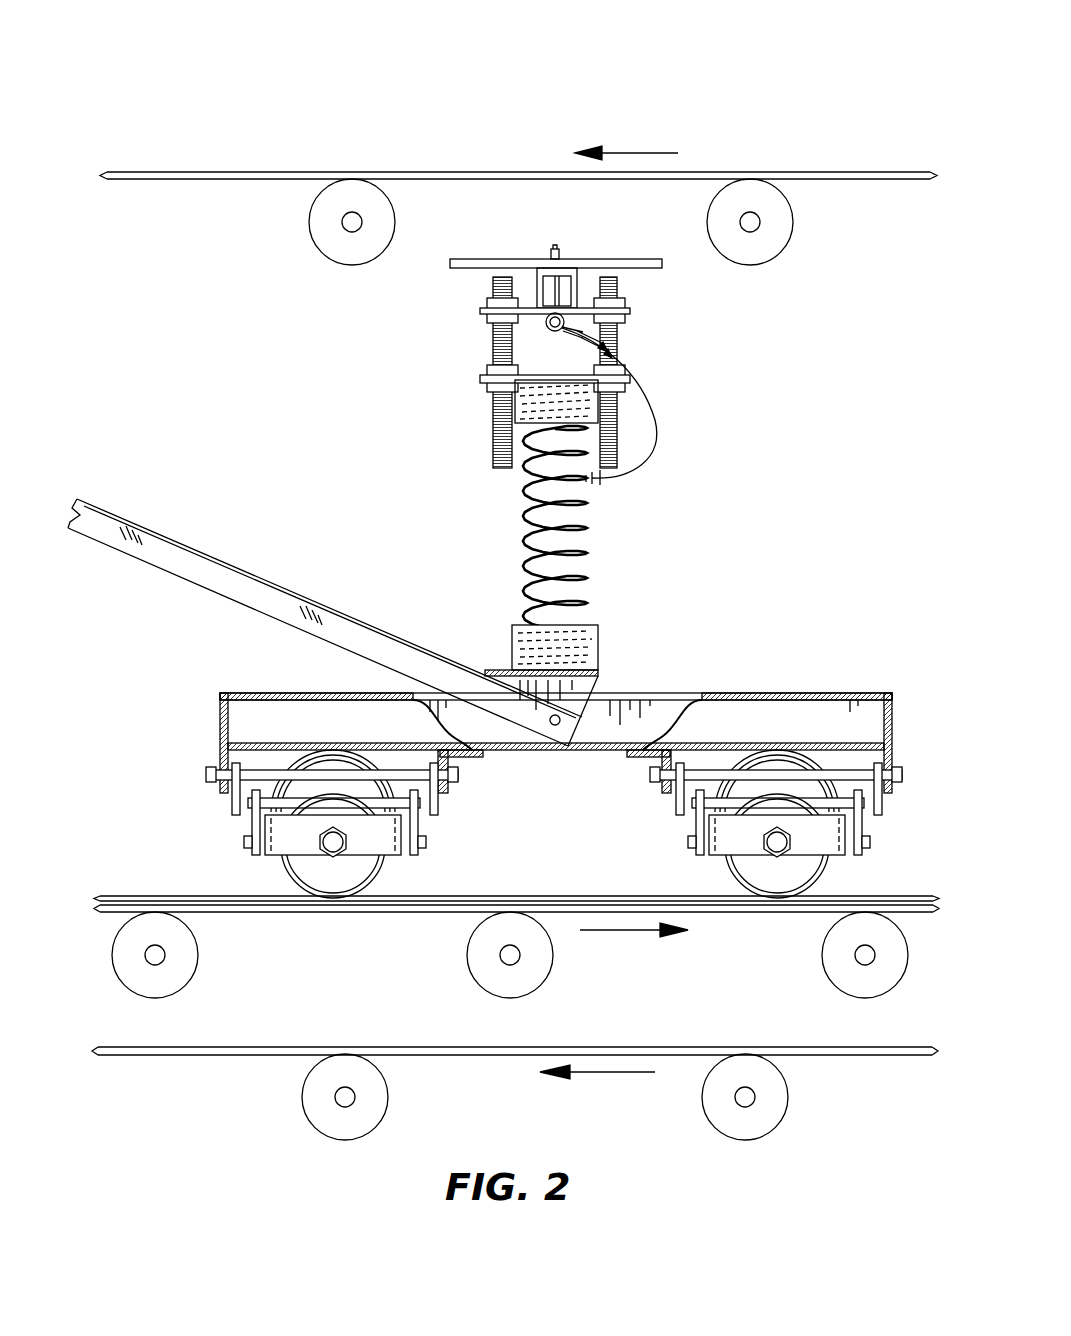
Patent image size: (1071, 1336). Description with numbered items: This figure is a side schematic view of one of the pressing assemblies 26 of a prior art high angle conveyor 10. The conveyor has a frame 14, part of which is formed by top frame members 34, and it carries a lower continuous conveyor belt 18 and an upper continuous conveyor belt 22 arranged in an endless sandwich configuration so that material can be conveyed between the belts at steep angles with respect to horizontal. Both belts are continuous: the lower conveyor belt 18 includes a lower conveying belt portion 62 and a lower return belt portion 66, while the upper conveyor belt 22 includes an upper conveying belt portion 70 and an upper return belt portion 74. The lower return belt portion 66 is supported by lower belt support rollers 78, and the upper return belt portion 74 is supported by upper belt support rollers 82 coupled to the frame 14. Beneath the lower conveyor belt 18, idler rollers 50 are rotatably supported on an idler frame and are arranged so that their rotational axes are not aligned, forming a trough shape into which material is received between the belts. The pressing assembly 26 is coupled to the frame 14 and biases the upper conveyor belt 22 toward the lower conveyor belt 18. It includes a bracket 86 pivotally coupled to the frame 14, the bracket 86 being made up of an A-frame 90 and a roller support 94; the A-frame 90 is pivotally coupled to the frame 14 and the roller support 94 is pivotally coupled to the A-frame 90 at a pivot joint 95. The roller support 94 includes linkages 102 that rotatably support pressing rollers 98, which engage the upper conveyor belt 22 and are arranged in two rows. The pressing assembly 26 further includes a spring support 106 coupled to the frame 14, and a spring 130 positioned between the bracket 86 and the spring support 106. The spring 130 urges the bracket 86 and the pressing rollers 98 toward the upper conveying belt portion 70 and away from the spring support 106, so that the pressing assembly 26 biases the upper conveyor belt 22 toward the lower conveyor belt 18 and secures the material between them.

The high angle conveyor 10 is at (126, 120).
The frame 14 is at (527, 258).
The top frame members 34 is at (535, 290).
The lower continuous conveyor belt 18 is at (484, 1008).
The upper continuous conveyor belt 22 is at (484, 507).
The pressing assembly 26 is at (814, 382).
The idler rollers 50 is at (185, 972).
The lower conveying belt portion 62 is at (106, 913).
The lower return belt portion 66 is at (125, 1058).
The upper conveying belt portion 70 is at (118, 895).
The upper return belt portion 74 is at (245, 175).
The lower belt support rollers 78 is at (375, 1100).
The upper belt support rollers 82 is at (333, 232).
The bracket 86 is at (226, 493).
The A-frame 90 is at (245, 597).
The roller support 94 is at (678, 702).
The pivot joint 95 is at (556, 727).
The pressing rollers 98 is at (360, 873).
The linkages 102 is at (436, 833).
The spring support 106 is at (435, 367).
The spring 130 is at (592, 562).